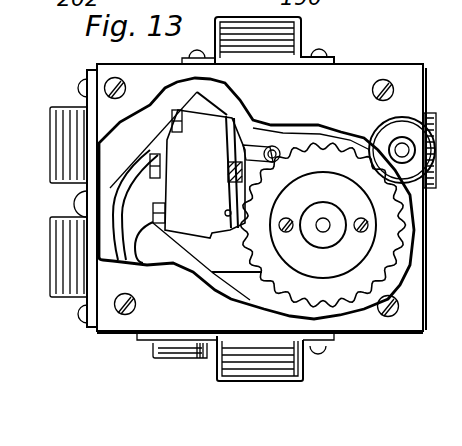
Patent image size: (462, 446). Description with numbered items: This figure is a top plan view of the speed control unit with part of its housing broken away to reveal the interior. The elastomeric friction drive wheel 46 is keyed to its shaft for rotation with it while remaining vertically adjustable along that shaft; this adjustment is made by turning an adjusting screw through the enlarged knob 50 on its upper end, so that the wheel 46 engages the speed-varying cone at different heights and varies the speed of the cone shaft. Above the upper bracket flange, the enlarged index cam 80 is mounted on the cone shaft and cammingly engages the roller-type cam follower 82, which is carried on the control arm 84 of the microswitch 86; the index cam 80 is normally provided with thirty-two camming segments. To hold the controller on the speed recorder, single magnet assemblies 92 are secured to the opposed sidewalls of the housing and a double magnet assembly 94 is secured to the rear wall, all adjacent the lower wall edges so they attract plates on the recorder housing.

The friction drive wheel 46 is at (372, 158).
The knob 50 is at (397, 137).
The index cam 80 is at (315, 150).
The cam follower 82 is at (283, 133).
The control arm 84 is at (226, 164).
The microswitch 86 is at (218, 119).
The single magnet assembly 92 is at (289, 30).
The double magnet assembly 94 is at (66, 162).